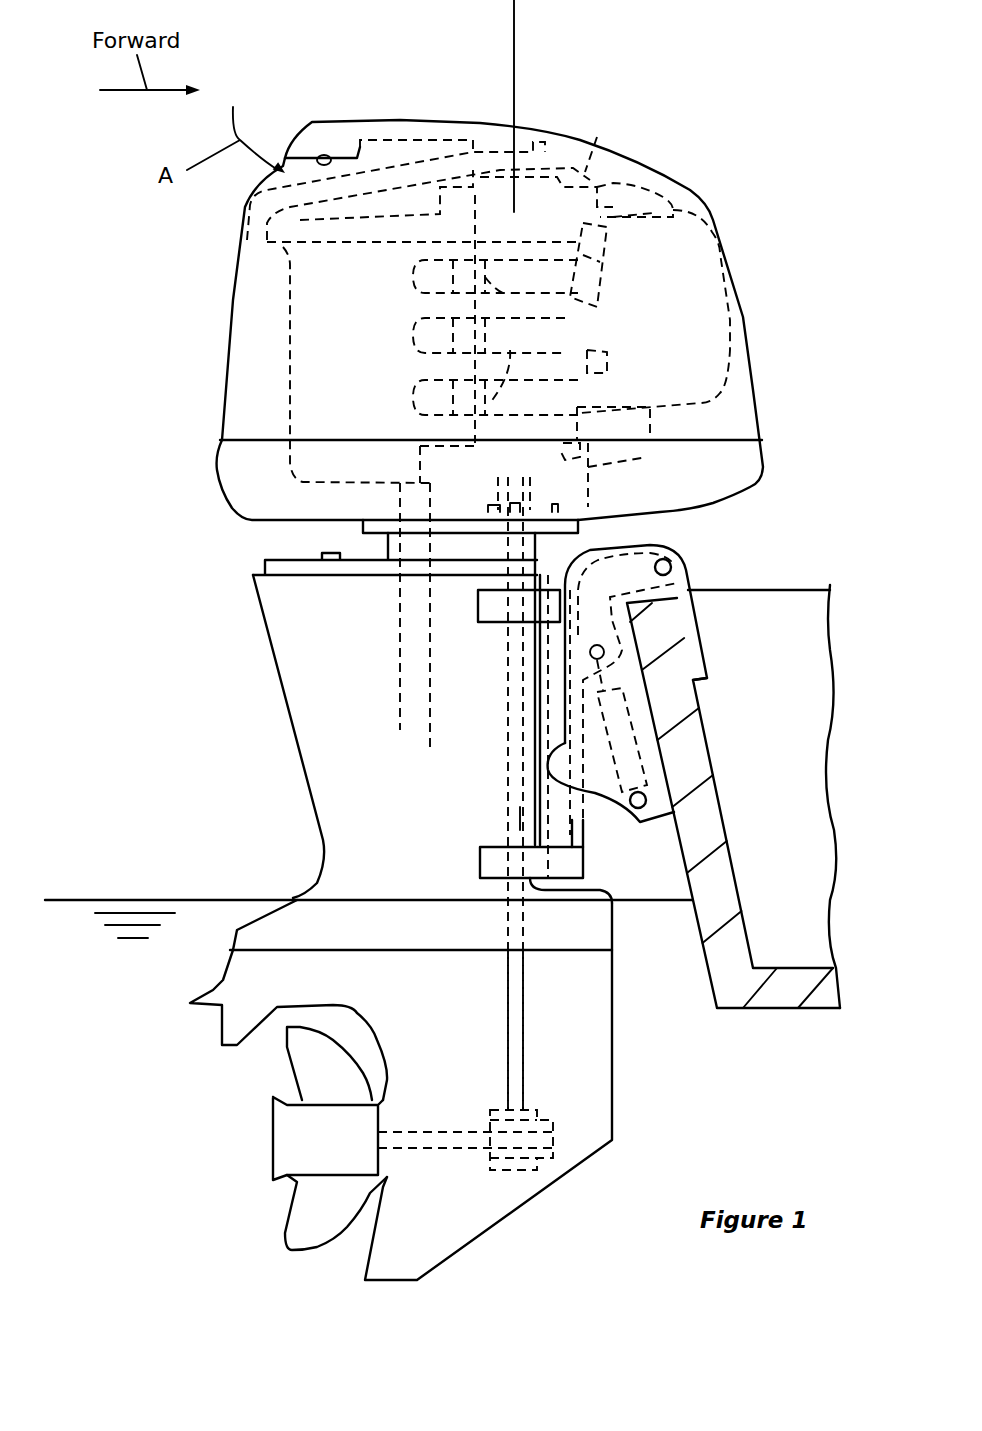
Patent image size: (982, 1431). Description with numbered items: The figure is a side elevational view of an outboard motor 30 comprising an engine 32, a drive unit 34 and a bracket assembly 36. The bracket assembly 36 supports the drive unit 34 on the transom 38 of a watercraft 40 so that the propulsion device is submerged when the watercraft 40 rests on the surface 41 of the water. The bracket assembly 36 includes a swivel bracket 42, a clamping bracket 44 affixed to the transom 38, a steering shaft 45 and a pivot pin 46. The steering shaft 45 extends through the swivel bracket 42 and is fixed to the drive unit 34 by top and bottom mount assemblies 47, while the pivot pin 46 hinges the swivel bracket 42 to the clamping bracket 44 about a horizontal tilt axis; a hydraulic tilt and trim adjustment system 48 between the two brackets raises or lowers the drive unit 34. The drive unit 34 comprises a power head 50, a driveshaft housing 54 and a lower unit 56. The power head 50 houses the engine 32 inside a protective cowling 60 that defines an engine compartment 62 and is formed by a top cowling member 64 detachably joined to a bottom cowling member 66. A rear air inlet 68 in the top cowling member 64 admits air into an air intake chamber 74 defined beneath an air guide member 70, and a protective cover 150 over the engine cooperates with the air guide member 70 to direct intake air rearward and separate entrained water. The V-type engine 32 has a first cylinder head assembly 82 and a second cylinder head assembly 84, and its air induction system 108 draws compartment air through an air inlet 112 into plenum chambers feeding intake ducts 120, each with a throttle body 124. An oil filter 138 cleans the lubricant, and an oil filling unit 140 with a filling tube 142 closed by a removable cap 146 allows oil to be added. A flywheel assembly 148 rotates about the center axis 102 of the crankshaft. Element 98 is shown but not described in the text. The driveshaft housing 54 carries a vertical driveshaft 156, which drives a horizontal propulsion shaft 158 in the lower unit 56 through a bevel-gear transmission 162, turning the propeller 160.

The outboard motor 30 is at (716, 106).
The engine 32 is at (275, 355).
The drive unit 34 is at (214, 645).
The bracket assembly 36 is at (643, 850).
The transom 38 is at (723, 812).
The watercraft 40 is at (745, 1027).
The surface of a body of water 41 is at (128, 897).
The swivel bracket 42 is at (577, 830).
The clamping bracket 44 is at (588, 798).
The steering shaft 45 is at (520, 818).
The pivot pin 46 is at (672, 566).
The top and bottom mount assemblies 47 is at (495, 610).
The hydraulic tilt and trim adjustment system 48 is at (620, 745).
The power head 50 is at (691, 182).
The driveshaft housing 54 is at (318, 688).
The lower unit 56 is at (277, 967).
The protective cowling 60 is at (78, 430).
The engine compartment 62 is at (255, 305).
The top cowling member 64 is at (218, 430).
The bottom cowling member 66 is at (216, 488).
The rear air inlet 68 is at (325, 150).
The air guide member 70 is at (414, 118).
The air intake chamber 74 is at (375, 138).
The first cylinder head assembly 82 is at (288, 410).
The second cylinder head assembly 84 is at (546, 192).
The exhaust passage 98 is at (588, 490).
The center axis of the crankshaft 102 is at (513, 22).
The air induction system 108 is at (735, 372).
The air inlet 112 is at (610, 380).
The intake ducts 120 is at (402, 384).
The throttle body 124 is at (487, 337).
The oil filter 138 is at (647, 457).
The oil filling unit 140 is at (612, 266).
The filling tube 142 is at (600, 292).
The removable cap 146 is at (653, 213).
The flywheel assembly 148 is at (590, 180).
The protective cover 150 is at (597, 137).
The driveshaft 156 is at (503, 1013).
The propulsion shaft 158 is at (430, 1150).
The propeller 160 is at (307, 1222).
The transmission 162 is at (547, 1096).